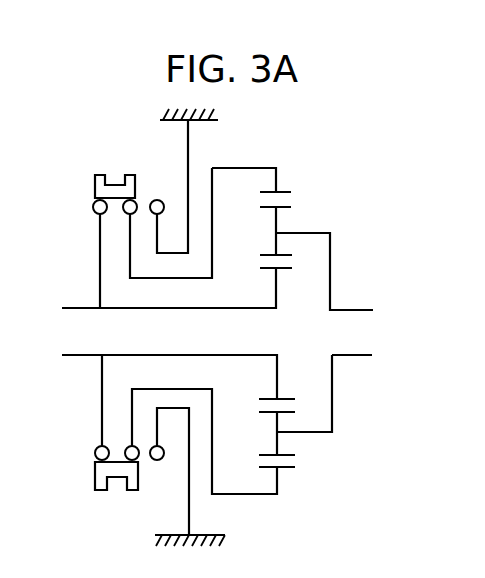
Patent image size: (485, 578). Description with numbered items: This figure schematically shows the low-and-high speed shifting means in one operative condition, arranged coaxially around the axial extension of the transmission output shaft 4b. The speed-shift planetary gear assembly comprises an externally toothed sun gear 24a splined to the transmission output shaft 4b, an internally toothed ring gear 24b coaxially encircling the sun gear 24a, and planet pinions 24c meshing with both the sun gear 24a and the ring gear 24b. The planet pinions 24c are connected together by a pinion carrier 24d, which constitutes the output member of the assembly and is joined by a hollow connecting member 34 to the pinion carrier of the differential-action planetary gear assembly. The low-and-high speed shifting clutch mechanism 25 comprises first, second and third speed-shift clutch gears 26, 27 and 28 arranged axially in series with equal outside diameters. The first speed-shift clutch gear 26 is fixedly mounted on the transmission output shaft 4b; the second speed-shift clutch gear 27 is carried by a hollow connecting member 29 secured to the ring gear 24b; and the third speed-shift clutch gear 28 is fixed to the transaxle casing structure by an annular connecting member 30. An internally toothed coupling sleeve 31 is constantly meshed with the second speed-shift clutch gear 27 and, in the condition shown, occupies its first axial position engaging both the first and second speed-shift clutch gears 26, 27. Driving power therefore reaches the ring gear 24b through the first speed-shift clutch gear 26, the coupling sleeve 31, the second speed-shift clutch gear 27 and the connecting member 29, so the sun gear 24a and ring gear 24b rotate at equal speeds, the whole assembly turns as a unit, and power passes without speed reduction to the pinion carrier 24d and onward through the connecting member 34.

The low-and-high speed shifting clutch mechanism 25 is at (137, 216).
The first speed-shift clutch gear 26 is at (96, 214).
The second speed-shift clutch gear 27 is at (134, 200).
The third speed-shift clutch gear 28 is at (161, 201).
The hollow connecting member 29 is at (258, 167).
The annular connecting member 30 is at (190, 141).
The coupling sleeve 31 is at (95, 176).
The sun gear 24a is at (268, 270).
The ring gear 24b is at (285, 191).
The planet pinions 24c is at (275, 238).
The pinion carrier 24d is at (316, 232).
The hollow connecting member 34 is at (353, 309).
The transmission output shaft 4b is at (79, 356).